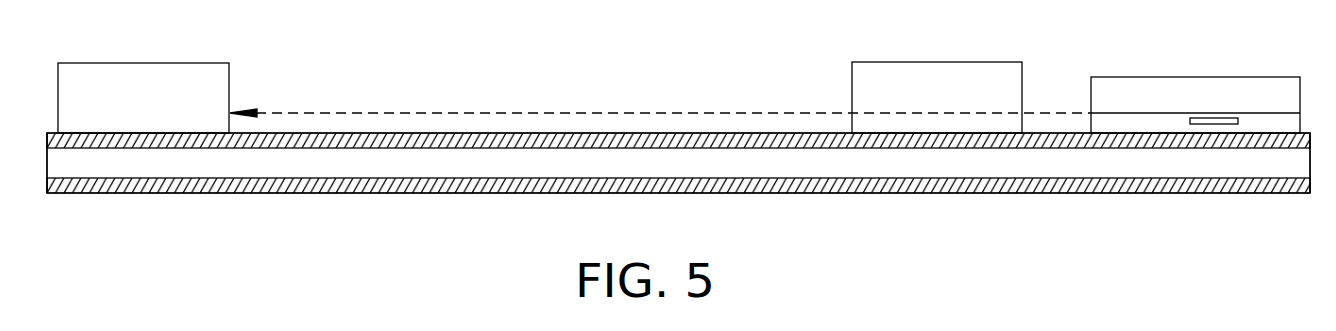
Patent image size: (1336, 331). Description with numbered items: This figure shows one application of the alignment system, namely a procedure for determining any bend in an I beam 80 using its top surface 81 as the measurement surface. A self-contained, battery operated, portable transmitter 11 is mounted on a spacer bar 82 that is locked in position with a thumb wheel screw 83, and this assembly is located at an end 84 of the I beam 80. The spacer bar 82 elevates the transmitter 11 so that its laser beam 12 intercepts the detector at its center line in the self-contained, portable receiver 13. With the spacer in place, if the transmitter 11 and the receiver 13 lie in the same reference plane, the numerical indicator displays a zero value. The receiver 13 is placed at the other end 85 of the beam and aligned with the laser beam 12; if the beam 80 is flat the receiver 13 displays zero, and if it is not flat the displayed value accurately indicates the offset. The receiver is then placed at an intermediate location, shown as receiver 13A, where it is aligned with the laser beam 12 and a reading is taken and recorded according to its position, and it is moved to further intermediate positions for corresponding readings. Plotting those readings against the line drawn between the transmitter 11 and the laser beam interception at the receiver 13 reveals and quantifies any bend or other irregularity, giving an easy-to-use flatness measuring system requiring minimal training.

The transmitter 11 is at (1143, 77).
The laser beam 12 is at (553, 113).
The receiver 13 is at (132, 63).
The receiver at intermediate location 13A is at (900, 62).
The I beam 80 is at (262, 193).
The top surface 81 is at (312, 133).
The spacer bar 82 is at (1107, 118).
The thumb wheel screw 83 is at (1212, 123).
The end 84 is at (1301, 163).
The end 85 is at (58, 163).